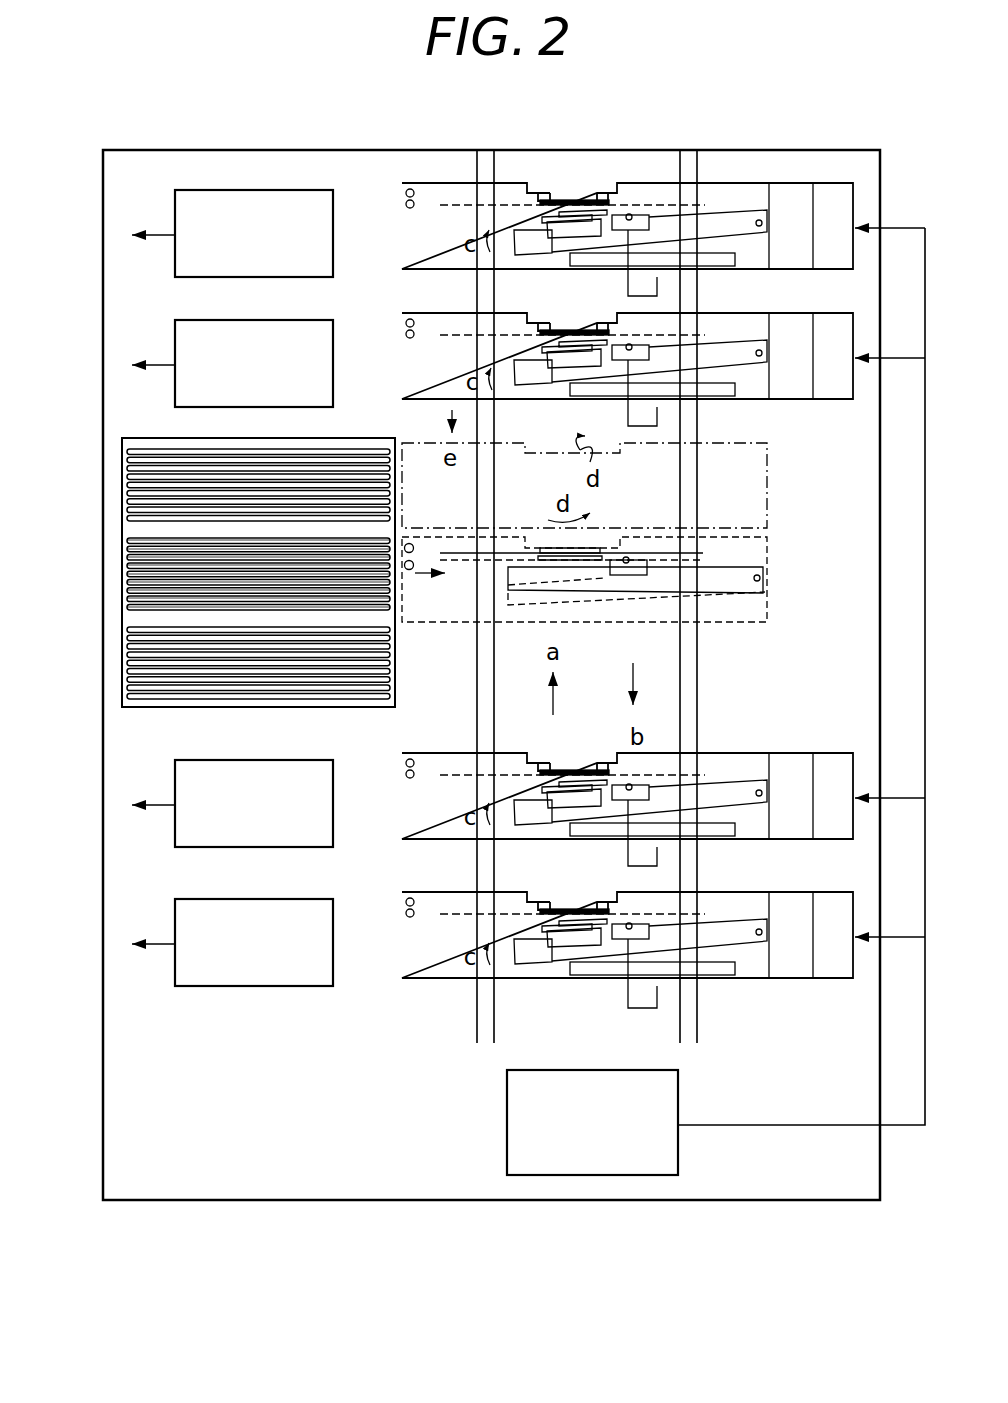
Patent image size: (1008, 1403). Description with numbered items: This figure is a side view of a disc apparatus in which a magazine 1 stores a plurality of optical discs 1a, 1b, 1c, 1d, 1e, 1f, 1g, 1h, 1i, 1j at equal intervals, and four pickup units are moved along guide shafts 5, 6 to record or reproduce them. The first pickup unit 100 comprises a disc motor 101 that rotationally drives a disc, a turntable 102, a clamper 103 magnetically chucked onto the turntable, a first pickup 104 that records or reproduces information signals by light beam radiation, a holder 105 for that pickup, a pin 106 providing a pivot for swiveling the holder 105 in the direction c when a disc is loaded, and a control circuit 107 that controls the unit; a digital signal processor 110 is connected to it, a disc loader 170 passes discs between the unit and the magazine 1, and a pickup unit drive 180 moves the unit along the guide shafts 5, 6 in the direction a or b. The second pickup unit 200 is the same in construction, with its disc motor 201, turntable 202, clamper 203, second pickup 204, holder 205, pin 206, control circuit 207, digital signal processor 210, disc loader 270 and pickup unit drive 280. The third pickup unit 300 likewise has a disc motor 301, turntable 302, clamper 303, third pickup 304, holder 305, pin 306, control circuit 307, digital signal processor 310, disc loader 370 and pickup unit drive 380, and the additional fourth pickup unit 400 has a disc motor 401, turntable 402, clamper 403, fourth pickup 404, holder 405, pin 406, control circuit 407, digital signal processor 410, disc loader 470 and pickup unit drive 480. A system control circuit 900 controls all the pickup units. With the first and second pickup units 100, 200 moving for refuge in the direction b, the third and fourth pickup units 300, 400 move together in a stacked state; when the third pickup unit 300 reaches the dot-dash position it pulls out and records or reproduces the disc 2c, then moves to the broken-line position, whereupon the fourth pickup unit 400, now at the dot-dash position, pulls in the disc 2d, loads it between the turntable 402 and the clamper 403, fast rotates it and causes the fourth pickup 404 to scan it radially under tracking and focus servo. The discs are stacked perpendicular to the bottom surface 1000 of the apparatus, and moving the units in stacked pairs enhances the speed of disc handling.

The magazine 1 is at (168, 437).
The optical disc 1a is at (127, 535).
The optical disc 1b is at (127, 547).
The optical disc 1c is at (452, 780).
The optical disc 1d is at (127, 560).
The optical disc 1e is at (127, 572).
The optical disc 1f is at (127, 580).
The optical disc 1g is at (127, 587).
The optical disc 1h is at (127, 595).
The optical disc 1i is at (127, 602).
The optical disc 1j is at (218, 673).
The disc 2c is at (452, 340).
The disc 2d is at (447, 207).
The guide shaft 5 is at (477, 160).
The guide shaft 6 is at (682, 160).
The first pickup unit 100 is at (402, 762).
The disc motor 101 is at (546, 827).
The turntable 102 is at (545, 787).
The clamper 103 is at (562, 757).
The first pickup 104 is at (632, 788).
The holder 105 is at (748, 832).
The pin 106 is at (757, 792).
The control circuit 107 is at (645, 832).
The digital signal processor 110 is at (243, 760).
The disc loader 170 is at (790, 753).
The pickup unit drive 180 is at (835, 753).
The second pickup unit 200 is at (402, 914).
The disc motor 201 is at (548, 964).
The turntable 202 is at (545, 926).
The clamper 203 is at (560, 888).
The second pickup 204 is at (627, 935).
The holder 205 is at (748, 972).
The pin 206 is at (758, 932).
The control circuit 207 is at (650, 972).
The digital signal processor 210 is at (240, 899).
The disc loader 270 is at (790, 979).
The pickup unit drive 280 is at (835, 979).
The third pickup unit 300 is at (402, 345).
The disc motor 301 is at (548, 390).
The turntable 302 is at (545, 347).
The clamper 303 is at (570, 328).
The third pickup 304 is at (650, 362).
The holder 305 is at (740, 358).
The pin 306 is at (762, 353).
The control circuit 307 is at (645, 392).
The digital signal processor 310 is at (218, 320).
The disc loader 370 is at (798, 392).
The pickup unit drive 380 is at (827, 392).
The fourth pickup unit 400 is at (402, 202).
The disc motor 401 is at (546, 257).
The turntable 402 is at (545, 217).
The clamper 403 is at (568, 183).
The fourth pickup 404 is at (647, 222).
The holder 405 is at (748, 262).
The pin 406 is at (757, 222).
The control circuit 407 is at (645, 262).
The digital signal processor 410 is at (232, 190).
The disc loader 470 is at (790, 183).
The pickup unit drive 480 is at (835, 183).
The system control circuit 900 is at (507, 1103).
The bottom surface 1000 is at (355, 1200).